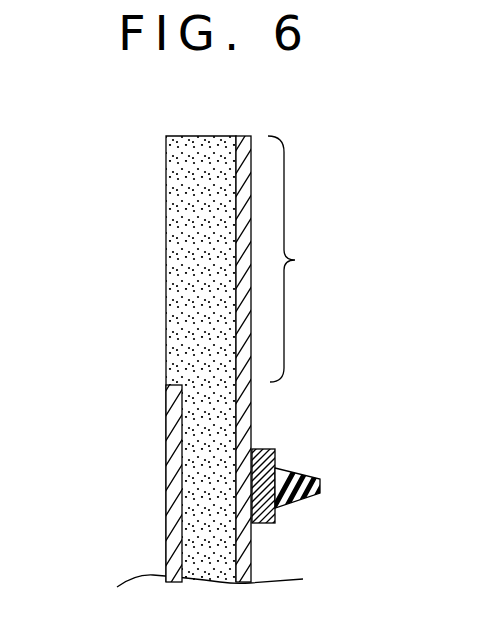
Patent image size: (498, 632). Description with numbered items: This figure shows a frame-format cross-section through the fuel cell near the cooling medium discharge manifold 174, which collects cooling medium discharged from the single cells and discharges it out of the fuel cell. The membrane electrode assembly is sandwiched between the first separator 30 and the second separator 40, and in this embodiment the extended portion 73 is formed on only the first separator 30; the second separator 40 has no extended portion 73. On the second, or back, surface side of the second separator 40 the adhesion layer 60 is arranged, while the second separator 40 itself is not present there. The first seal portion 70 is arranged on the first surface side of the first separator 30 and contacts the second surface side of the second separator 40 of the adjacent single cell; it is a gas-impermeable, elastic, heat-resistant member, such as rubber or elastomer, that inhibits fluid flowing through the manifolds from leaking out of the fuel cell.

The cooling medium discharge manifold 174 is at (234, 99).
The adhesion layer 60 is at (195, 235).
The extended portion 73 is at (298, 259).
The first separator 30 is at (252, 418).
The second separator 40 is at (176, 489).
The first seal portion 70 is at (303, 499).